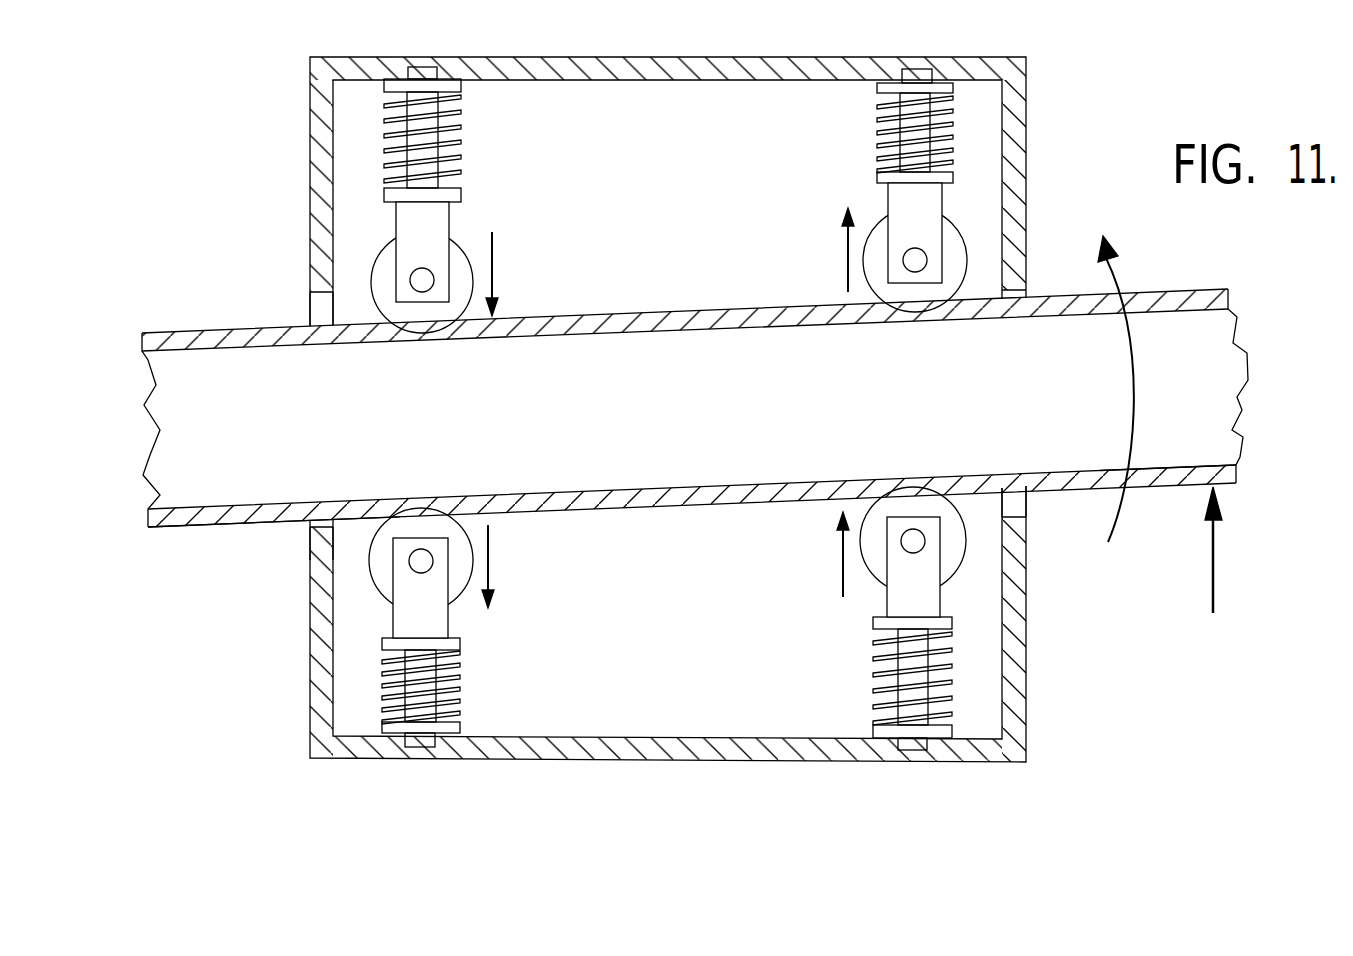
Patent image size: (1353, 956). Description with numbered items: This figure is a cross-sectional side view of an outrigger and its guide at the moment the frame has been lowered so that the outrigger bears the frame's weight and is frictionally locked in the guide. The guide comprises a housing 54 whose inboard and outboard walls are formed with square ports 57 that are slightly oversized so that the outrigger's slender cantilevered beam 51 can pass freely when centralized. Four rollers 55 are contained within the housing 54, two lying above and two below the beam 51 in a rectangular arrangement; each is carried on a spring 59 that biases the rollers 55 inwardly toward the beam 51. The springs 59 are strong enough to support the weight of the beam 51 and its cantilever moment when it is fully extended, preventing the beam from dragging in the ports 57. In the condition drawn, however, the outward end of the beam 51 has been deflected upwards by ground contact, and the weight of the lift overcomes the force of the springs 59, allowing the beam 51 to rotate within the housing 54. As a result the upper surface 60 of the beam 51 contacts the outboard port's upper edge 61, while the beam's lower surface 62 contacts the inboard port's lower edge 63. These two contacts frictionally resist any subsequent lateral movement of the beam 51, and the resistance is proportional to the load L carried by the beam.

The housing 54 is at (665, 57).
The springs 59 is at (447, 152).
The rollers 55 is at (462, 260).
The ports 57 is at (313, 309).
The port's upper edge 61 is at (1028, 290).
The upper surface 60 is at (1163, 289).
The lower surface 62 is at (210, 527).
The lower edge 63 is at (303, 527).
The beam 51 is at (1163, 487).
The load L is at (1212, 572).